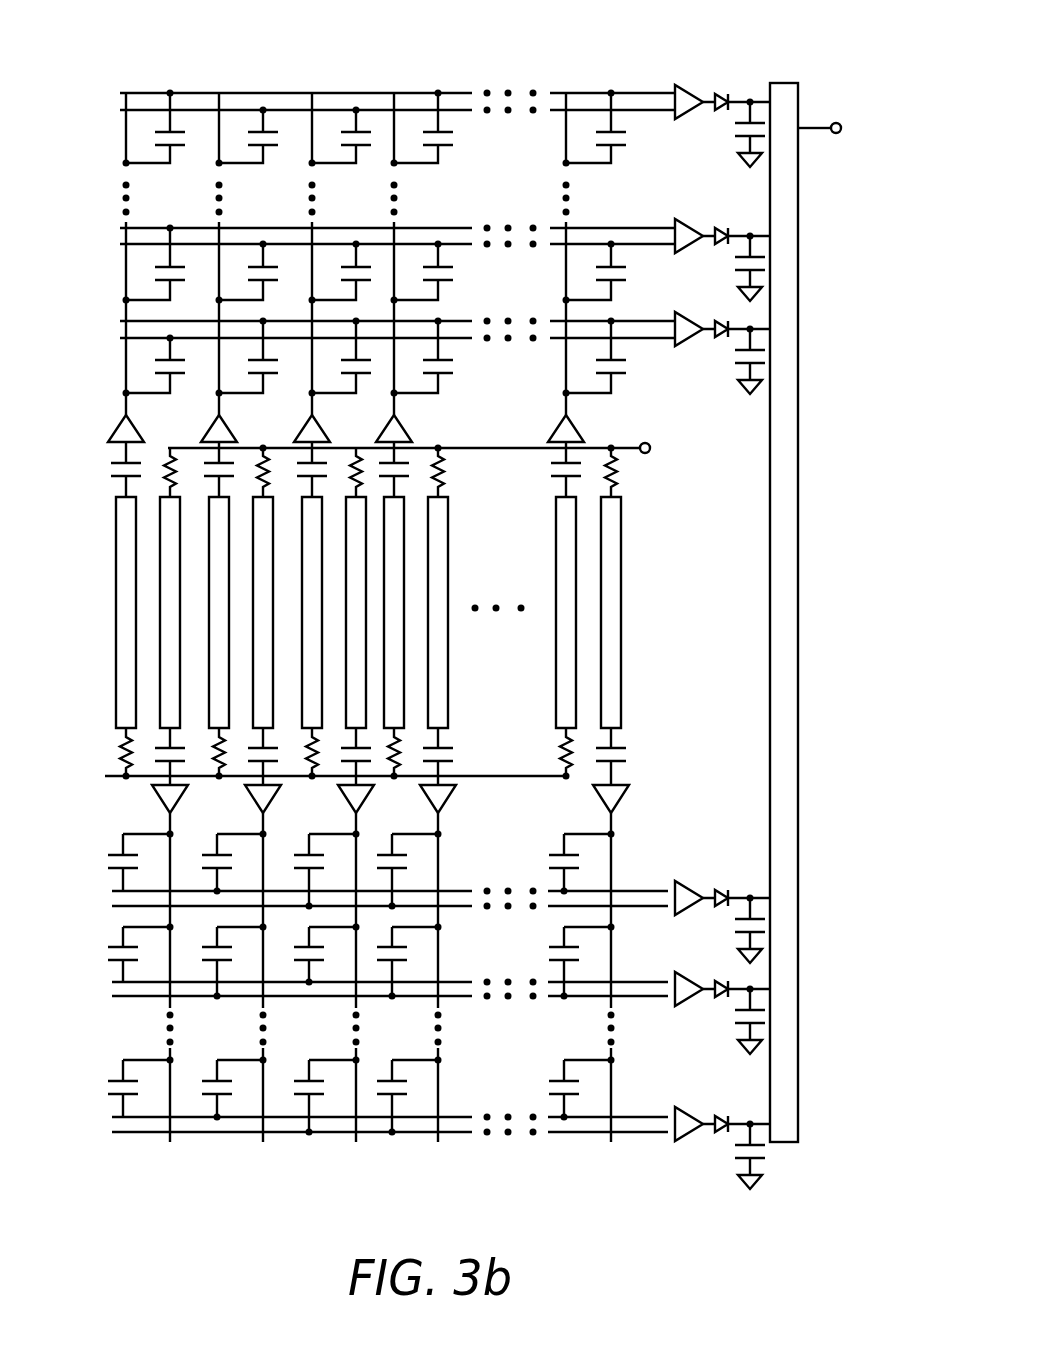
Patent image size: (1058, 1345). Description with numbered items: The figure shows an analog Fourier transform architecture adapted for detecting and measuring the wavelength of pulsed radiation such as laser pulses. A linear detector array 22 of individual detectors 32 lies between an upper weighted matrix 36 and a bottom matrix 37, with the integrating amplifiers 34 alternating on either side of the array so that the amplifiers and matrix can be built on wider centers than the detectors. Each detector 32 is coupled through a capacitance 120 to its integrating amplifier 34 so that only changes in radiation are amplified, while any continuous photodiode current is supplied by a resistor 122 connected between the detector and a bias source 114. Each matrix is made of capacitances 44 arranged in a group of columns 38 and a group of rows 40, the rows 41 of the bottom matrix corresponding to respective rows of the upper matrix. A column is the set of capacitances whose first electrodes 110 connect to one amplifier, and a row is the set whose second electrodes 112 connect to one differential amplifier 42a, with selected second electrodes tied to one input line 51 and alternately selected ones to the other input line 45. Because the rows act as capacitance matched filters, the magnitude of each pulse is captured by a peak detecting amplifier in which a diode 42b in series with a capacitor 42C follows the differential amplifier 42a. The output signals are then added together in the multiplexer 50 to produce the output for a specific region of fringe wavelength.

The detector array 22 is at (116, 791).
The detector 32 is at (116, 530).
The integrating amplifier 34 is at (118, 425).
The weighted matrix 36 is at (200, 46).
The bottom matrix 37 is at (152, 1187).
The columns 38 is at (107, 155).
The rows 40 is at (326, 73).
The rows 41 is at (283, 1172).
The differential amplifier 42a is at (690, 86).
The diode 42b is at (726, 88).
The capacitor 42C is at (741, 143).
The capacitance 44 is at (266, 146).
The input line 45 is at (658, 246).
The multiplexer 50 is at (801, 289).
The input line 51 is at (647, 228).
The first electrode 110 is at (126, 393).
The second electrode 112 is at (128, 330).
The bias source 114 is at (643, 441).
The capacitance 120 is at (553, 474).
The resistor 122 is at (621, 480).